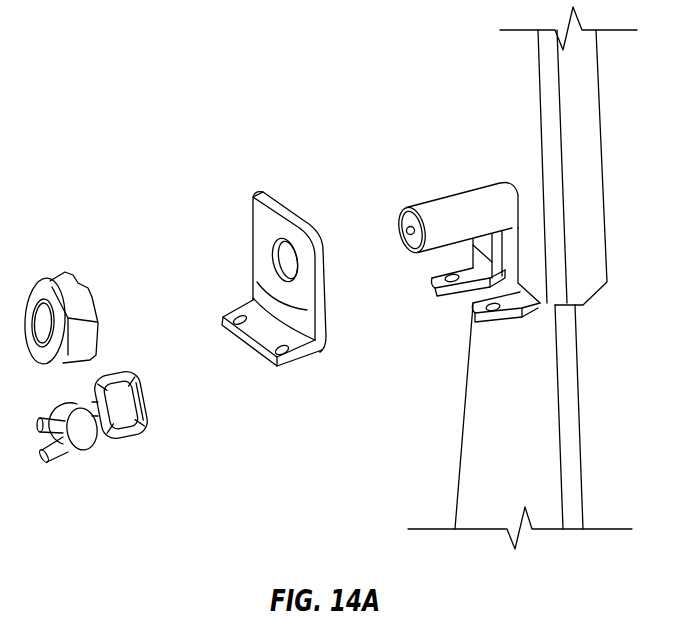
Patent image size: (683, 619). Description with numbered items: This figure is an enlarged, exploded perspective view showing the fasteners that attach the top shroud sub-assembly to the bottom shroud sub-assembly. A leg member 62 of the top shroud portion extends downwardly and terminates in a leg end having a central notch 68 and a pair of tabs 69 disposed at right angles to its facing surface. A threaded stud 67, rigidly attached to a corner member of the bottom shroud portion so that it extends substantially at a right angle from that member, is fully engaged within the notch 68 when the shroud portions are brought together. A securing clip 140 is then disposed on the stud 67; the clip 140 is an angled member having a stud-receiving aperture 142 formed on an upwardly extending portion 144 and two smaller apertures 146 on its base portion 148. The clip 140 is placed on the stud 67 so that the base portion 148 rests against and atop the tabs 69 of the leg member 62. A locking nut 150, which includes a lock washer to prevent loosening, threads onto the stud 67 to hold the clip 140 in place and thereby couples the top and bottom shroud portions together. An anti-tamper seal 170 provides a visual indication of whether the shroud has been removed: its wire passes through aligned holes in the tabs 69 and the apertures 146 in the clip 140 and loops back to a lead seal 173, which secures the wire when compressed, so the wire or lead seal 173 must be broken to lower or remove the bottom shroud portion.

The leg member 62 is at (527, 135).
The threaded stud 67 is at (428, 212).
The central notch 68 is at (472, 300).
The tabs 69 is at (433, 288).
The securing clip 140 is at (272, 213).
The stud-receiving aperture 142 is at (273, 253).
The upwardly extending portion 144 is at (257, 282).
The smaller apertures 146 is at (228, 315).
The base portion 148 is at (265, 343).
The locking nut 150 is at (78, 272).
The anti-tamper seal 170 is at (125, 437).
The lead seal 173 is at (82, 438).